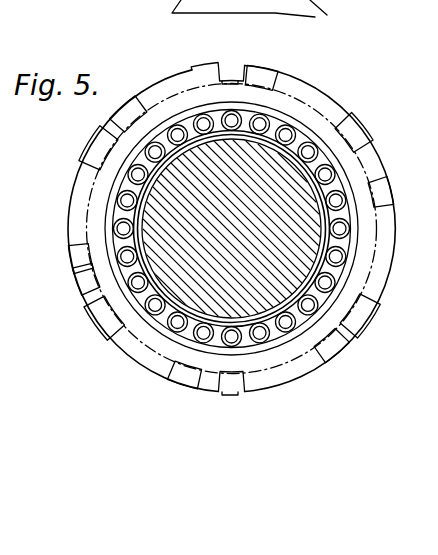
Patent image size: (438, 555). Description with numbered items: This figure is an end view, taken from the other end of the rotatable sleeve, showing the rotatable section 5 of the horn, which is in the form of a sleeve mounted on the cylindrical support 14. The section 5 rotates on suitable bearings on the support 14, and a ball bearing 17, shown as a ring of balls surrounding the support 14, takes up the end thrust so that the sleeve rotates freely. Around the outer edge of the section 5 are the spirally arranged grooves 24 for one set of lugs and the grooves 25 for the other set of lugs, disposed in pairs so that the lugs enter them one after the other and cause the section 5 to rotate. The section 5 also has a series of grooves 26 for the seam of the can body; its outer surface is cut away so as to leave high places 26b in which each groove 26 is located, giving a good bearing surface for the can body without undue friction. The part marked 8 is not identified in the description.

The rotatable section 5 is at (385, 241).
The casing part 8 is at (307, 10).
The cylindrical support 14 is at (173, 228).
The ball bearing 17 is at (167, 313).
The grooves 24 is at (125, 108).
The grooves 25 is at (247, 72).
The grooves 26 is at (233, 78).
The high places 26b is at (380, 112).